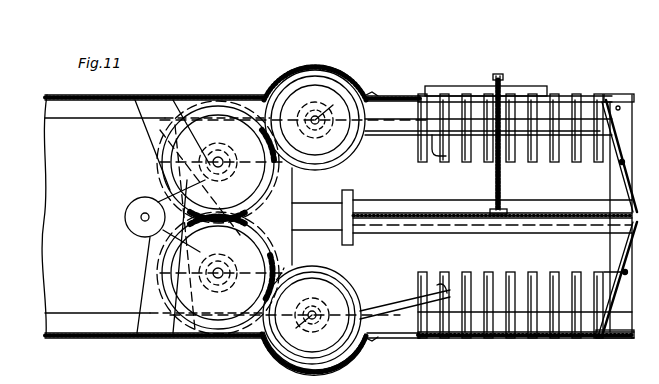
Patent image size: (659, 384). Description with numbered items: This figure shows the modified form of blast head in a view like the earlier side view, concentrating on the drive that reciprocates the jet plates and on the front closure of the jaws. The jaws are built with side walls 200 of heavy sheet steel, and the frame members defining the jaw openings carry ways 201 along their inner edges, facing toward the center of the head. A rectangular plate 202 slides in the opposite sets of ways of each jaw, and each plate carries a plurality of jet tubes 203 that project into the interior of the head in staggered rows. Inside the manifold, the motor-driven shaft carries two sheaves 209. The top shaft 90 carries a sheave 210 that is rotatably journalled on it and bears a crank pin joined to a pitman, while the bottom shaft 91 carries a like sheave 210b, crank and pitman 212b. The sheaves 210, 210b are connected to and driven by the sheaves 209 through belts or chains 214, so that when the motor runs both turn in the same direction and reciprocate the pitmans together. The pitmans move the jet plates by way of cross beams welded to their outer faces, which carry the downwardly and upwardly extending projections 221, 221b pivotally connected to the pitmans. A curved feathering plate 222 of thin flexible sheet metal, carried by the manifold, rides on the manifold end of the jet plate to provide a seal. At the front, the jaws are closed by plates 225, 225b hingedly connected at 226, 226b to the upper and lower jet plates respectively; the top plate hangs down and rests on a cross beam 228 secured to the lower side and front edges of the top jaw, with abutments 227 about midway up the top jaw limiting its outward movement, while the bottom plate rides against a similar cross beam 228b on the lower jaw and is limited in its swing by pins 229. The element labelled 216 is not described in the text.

The top shaft 90 is at (328, 118).
The bottom shaft 91 is at (302, 326).
The side walls 200 is at (547, 199).
The ways 201 is at (633, 95).
The rectangular plate 202 is at (402, 93).
The jet tubes 203 is at (488, 93).
The sheaves 209 is at (132, 236).
The sheave 210 is at (290, 78).
The sheave 210b is at (350, 290).
The pitman 212b is at (403, 308).
The belts or chains 214 is at (293, 194).
The upper drive shaft 216 is at (387, 137).
The downwardly extending projection 221 is at (441, 158).
The upwardly extending projection 221b is at (450, 292).
The curved feathering plate 222 is at (374, 93).
The plate 225 is at (540, 178).
The plate 225b is at (626, 271).
The hinge connection 226 is at (606, 96).
The hinge connection 226b is at (598, 339).
The abutments 227 is at (630, 168).
The cross beam 228 is at (612, 214).
The cross beam 228b is at (626, 228).
The pins 229 is at (604, 272).